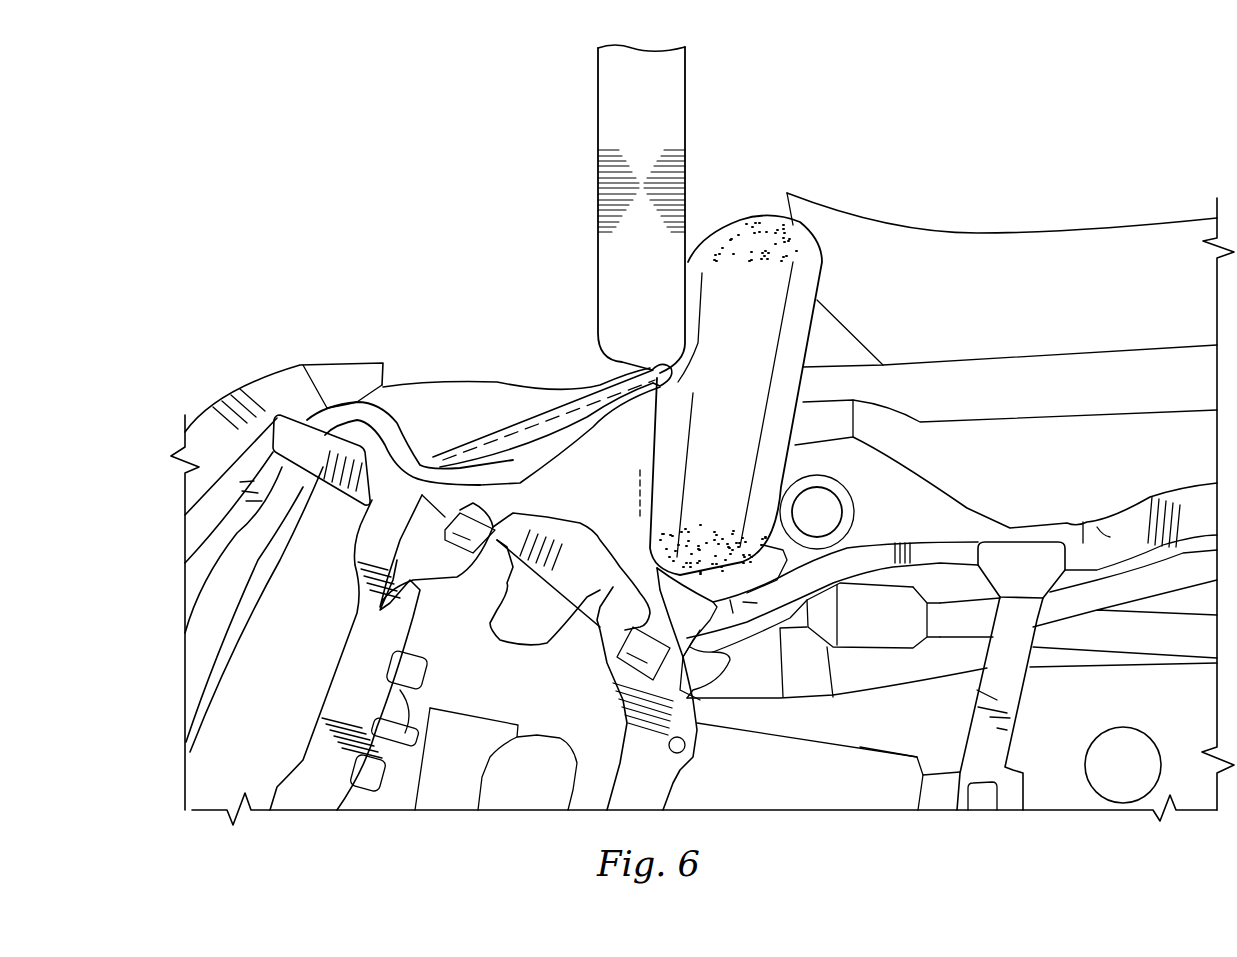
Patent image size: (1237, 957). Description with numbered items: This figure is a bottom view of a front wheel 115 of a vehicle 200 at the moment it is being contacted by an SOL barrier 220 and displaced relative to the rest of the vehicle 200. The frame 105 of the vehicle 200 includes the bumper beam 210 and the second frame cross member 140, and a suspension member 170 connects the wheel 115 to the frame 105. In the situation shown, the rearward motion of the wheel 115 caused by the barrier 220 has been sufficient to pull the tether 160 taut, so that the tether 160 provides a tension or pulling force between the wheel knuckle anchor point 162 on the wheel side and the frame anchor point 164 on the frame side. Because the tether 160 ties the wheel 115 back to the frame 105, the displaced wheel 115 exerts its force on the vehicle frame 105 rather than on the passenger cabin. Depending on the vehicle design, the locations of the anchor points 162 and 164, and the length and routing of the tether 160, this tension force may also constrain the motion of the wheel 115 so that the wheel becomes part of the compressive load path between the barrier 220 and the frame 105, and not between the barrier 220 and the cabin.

The vehicle 200 is at (253, 108).
The SOL barrier 220 is at (607, 102).
The front wheel 115 is at (822, 271).
The bumper beam 210 is at (253, 388).
The frame anchor point 164 is at (433, 450).
The tether 160 is at (520, 417).
The wheel knuckle anchor point 162 is at (622, 376).
The suspension member 170 is at (592, 523).
The No. 2 frame cross member 140 is at (303, 800).
The frame 105 is at (1036, 689).